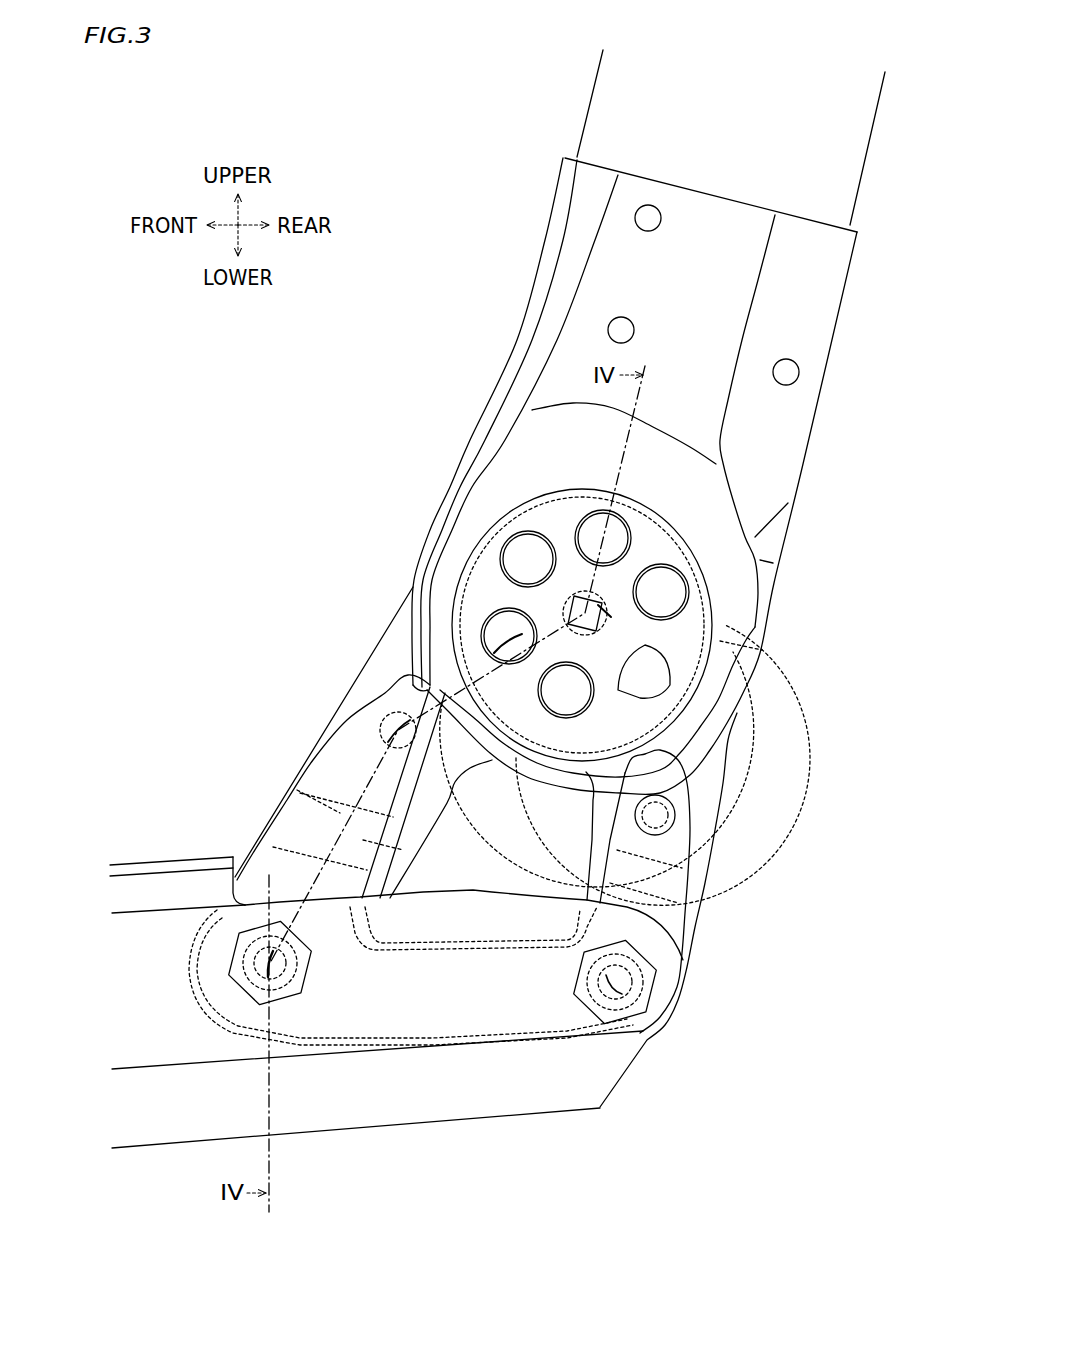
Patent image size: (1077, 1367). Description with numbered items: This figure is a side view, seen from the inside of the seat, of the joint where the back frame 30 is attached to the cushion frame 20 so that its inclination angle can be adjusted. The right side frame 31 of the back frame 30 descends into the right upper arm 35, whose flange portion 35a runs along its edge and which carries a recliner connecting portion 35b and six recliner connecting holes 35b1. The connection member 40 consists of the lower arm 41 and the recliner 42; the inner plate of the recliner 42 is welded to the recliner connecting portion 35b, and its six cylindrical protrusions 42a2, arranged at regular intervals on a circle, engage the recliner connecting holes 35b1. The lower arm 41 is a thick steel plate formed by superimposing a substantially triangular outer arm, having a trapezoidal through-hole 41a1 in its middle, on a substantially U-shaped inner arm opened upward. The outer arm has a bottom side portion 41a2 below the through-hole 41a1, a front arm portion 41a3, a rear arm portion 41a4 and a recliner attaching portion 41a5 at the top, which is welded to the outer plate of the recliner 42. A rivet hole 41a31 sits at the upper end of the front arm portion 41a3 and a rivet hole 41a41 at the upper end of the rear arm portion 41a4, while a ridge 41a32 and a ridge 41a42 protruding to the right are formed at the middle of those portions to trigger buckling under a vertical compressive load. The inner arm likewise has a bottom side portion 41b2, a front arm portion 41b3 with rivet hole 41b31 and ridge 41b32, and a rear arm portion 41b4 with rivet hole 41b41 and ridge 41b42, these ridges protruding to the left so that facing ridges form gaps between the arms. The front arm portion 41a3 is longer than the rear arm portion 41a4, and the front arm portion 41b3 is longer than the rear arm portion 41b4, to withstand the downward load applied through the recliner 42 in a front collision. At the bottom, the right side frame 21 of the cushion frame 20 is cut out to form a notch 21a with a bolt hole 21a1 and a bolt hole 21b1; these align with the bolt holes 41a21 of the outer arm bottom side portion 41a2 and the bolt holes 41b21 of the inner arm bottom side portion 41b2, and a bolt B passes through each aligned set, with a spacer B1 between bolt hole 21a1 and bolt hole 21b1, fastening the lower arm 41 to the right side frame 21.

The back frame 30 is at (677, 137).
The right side frame 31 is at (590, 95).
The right upper arm 35 is at (606, 424).
The bracket flange portion 35a is at (551, 222).
The recliner connecting portion 35b is at (548, 508).
The recliner connecting holes 35b1 is at (680, 598).
The connection member 40 is at (511, 702).
The lower arm 41 is at (367, 655).
The recliner 42 is at (455, 507).
The cylindrical protrusions 42a2 is at (570, 690).
The through-hole 41a1 is at (455, 787).
The front arm portion 41a3 is at (337, 693).
The rear arm portion 41a4 is at (725, 790).
The recliner attaching portion 41a5 is at (720, 647).
The rivet hole 41a31 is at (378, 725).
The rivet hole 41b31 is at (283, 729).
The ridge 41a32 is at (267, 810).
The front arm portion 41b3 is at (263, 868).
The ridge 41b32 is at (403, 850).
The rivet hole 41a41 is at (677, 827).
The rivet hole 41b41 is at (753, 821).
The ridge 41a42 is at (595, 848).
The rear arm portion 41b4 is at (677, 915).
The ridge 41b42 is at (670, 882).
The bottom side portion 41a2 is at (497, 1030).
The bottom side portion 41b2 is at (407, 1020).
The bolt holes 41a21 is at (302, 990).
The bolt holes 41b21 is at (556, 1042).
The cushion frame 20 is at (376, 945).
The right side frame 21 is at (142, 863).
The notch 21a is at (330, 813).
The bolt hole 21a1 is at (556, 1042).
The bolt hole 21b1 is at (556, 1042).
The bolt B is at (311, 965).
The spacer B1 is at (506, 1042).